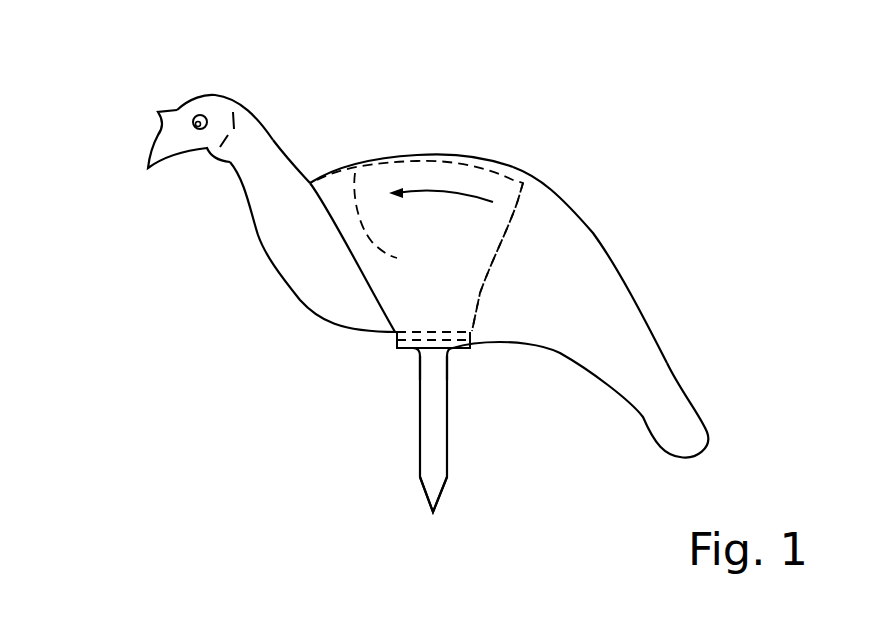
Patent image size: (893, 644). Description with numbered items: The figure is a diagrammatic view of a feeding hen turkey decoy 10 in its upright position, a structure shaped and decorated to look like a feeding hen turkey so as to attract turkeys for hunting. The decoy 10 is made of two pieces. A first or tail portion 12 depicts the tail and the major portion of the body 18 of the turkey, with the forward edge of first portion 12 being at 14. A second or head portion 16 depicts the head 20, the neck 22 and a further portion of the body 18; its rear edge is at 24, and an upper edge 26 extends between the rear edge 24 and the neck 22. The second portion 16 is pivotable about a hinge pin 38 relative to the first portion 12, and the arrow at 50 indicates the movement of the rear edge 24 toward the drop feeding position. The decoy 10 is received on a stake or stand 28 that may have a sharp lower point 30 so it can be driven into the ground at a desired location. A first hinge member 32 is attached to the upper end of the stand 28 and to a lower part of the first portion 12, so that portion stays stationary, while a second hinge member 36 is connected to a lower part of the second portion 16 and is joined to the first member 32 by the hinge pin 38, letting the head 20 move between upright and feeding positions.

The feeding hen turkey decoy 10 is at (556, 86).
The first or tail portion 12 is at (595, 233).
The forward edge of first portion 14 is at (352, 258).
The second or head portion 16 is at (340, 303).
The body 18 is at (608, 302).
The head 20 is at (192, 102).
The neck 22 is at (282, 142).
The rear edge of second portion 24 is at (507, 230).
The upper edge 26 is at (394, 228).
The stake or stand 28 is at (447, 427).
The sharp lower point 30 is at (435, 512).
The first hinge member 32 is at (425, 350).
The second hinge member 36 is at (478, 333).
The hinge pin 38 is at (398, 334).
The movement of edge 50 is at (445, 192).